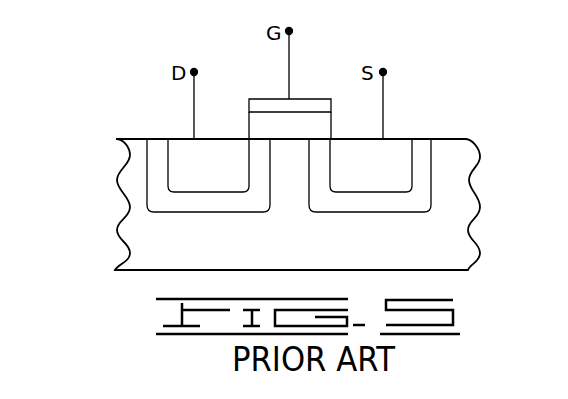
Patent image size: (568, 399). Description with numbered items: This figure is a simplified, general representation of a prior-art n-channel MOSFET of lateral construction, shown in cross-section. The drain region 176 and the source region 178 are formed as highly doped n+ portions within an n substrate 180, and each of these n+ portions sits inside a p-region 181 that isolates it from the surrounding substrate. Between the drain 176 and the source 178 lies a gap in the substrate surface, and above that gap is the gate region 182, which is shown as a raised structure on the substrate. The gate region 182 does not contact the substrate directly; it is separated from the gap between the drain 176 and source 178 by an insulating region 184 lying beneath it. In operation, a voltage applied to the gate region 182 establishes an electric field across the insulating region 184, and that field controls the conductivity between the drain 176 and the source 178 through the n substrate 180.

The drain region 176 is at (175, 139).
The source region 178 is at (395, 148).
The n substrate 180 is at (438, 218).
The p-regions 181 is at (155, 173).
The gate region 182 is at (272, 98).
The insulating region 184 is at (325, 128).